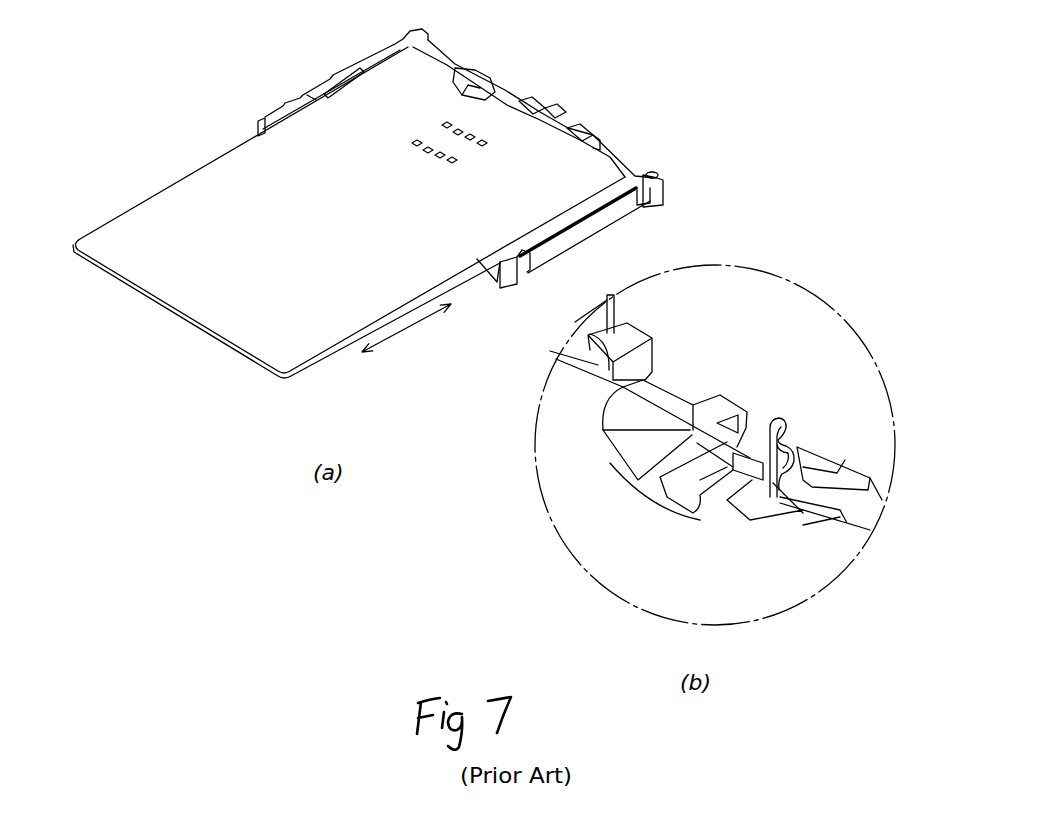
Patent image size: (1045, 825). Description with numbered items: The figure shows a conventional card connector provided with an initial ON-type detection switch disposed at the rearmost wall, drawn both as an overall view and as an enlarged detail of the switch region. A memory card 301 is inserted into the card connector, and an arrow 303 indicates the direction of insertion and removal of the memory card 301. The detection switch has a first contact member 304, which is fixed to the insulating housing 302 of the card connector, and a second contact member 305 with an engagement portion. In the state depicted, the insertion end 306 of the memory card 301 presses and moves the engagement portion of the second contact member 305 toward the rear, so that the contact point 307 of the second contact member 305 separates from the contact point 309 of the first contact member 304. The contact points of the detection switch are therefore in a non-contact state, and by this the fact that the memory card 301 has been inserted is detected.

The memory card 301 is at (330, 323).
The insulating housing 302 is at (581, 236).
The arrow 303 is at (407, 331).
The first contact member 304 is at (677, 400).
The second contact member 305 is at (524, 99).
The insertion end 306 is at (582, 130).
The contact point 307 is at (788, 446).
The contact point 309 is at (763, 500).